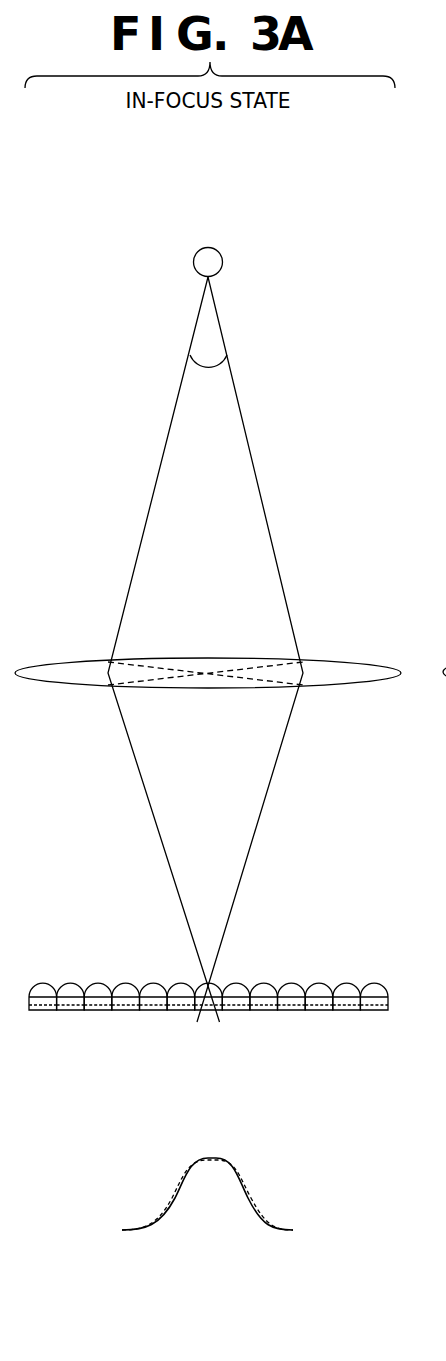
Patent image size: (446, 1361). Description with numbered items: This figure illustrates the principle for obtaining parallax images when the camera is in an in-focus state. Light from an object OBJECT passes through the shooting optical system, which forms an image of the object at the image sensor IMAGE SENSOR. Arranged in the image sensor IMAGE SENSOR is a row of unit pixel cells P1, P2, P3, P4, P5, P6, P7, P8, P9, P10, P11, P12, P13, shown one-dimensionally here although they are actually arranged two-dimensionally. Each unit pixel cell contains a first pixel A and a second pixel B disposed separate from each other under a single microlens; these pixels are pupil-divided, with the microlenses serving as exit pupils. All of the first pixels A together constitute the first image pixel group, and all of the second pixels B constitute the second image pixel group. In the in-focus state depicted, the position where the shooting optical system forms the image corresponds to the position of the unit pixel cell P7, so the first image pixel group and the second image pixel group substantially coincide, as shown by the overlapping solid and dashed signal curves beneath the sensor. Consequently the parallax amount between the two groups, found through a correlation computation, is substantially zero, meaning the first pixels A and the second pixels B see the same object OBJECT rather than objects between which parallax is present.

The object OBJECT is at (235, 218).
The image sensor IMAGE SENSOR is at (208, 983).
The unit pixel cell P1 is at (43, 1029).
The unit pixel cell P2 is at (71, 1029).
The unit pixel cell P3 is at (98, 1029).
The unit pixel cell P4 is at (126, 1029).
The unit pixel cell P5 is at (154, 1029).
The unit pixel cell P6 is at (181, 1029).
The unit pixel cell P7 is at (209, 1029).
The unit pixel cell P8 is at (236, 1029).
The unit pixel cell P9 is at (264, 1029).
The unit pixel cell P10 is at (292, 1029).
The unit pixel cell P11 is at (319, 1029).
The unit pixel cell P12 is at (347, 1029).
The unit pixel cell P13 is at (374, 1029).
The 1A pixel A is at (75, 1263).
The 1B pixel B is at (75, 1294).